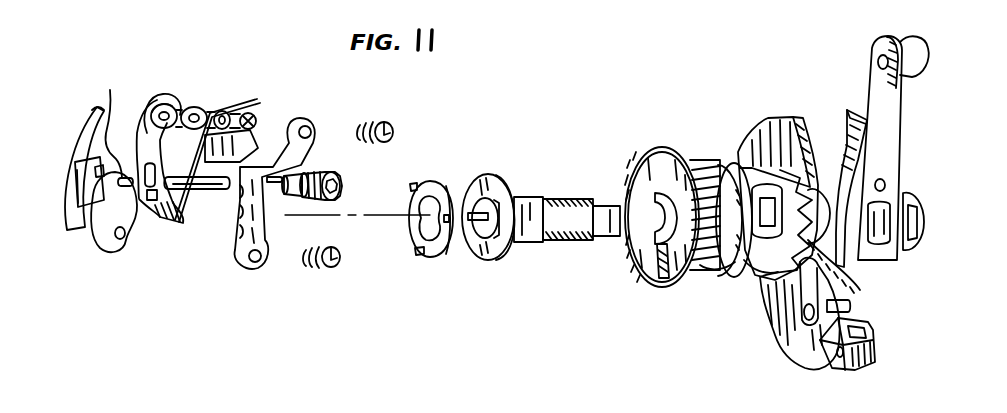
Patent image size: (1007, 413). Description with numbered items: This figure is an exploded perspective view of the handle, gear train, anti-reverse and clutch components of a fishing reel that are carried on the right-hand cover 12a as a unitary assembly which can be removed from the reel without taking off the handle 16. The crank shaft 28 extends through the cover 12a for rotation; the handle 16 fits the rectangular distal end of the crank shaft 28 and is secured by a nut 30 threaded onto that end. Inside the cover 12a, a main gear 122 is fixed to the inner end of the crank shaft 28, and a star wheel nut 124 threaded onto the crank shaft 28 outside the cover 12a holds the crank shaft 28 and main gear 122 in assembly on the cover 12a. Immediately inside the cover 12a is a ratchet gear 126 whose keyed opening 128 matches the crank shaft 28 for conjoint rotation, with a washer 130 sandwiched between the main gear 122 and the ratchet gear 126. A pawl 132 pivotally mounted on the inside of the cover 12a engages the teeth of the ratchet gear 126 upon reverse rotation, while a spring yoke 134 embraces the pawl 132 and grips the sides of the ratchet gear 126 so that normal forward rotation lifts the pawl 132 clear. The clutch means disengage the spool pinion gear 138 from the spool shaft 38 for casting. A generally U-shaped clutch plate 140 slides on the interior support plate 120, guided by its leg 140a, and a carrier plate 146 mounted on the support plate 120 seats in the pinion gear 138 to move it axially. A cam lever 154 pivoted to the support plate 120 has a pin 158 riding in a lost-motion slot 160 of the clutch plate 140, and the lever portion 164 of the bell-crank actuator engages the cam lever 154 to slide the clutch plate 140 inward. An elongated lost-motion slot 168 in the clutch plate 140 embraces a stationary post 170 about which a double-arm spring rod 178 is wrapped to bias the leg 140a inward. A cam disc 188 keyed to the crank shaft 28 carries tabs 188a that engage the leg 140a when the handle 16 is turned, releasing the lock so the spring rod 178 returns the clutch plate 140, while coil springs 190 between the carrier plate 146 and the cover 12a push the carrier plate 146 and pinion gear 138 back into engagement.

The right-hand cover 12a is at (767, 128).
The handle 16 is at (878, 92).
The crank shaft 28 is at (563, 200).
The nut 30 is at (913, 257).
The spool shaft 38 is at (218, 192).
The support plate 120 is at (88, 110).
The main gear 122 is at (650, 153).
The star wheel nut 124 is at (843, 135).
The ratchet gear 126 is at (760, 268).
The keyed opening 128 is at (727, 160).
The washer 130 is at (717, 270).
The pawl 132 is at (790, 292).
The spring yoke 134 is at (827, 343).
The spool pinion gear 138 is at (334, 172).
The clutch plate 140 is at (182, 97).
The leg of clutch plate 140a is at (240, 130).
The carrier plate 146 is at (317, 117).
The cam lever 154 is at (110, 248).
The pin 158 is at (118, 146).
The lost-motion slot 160 is at (131, 142).
The lever portion 164 is at (82, 230).
The elongated lost-motion slot 168 is at (198, 105).
The stationary post 170 is at (237, 102).
The double-arm spring rod 178 is at (230, 107).
The cam disc 188 is at (441, 183).
The tabs 188a is at (418, 183).
The coil springs 190 is at (377, 118).